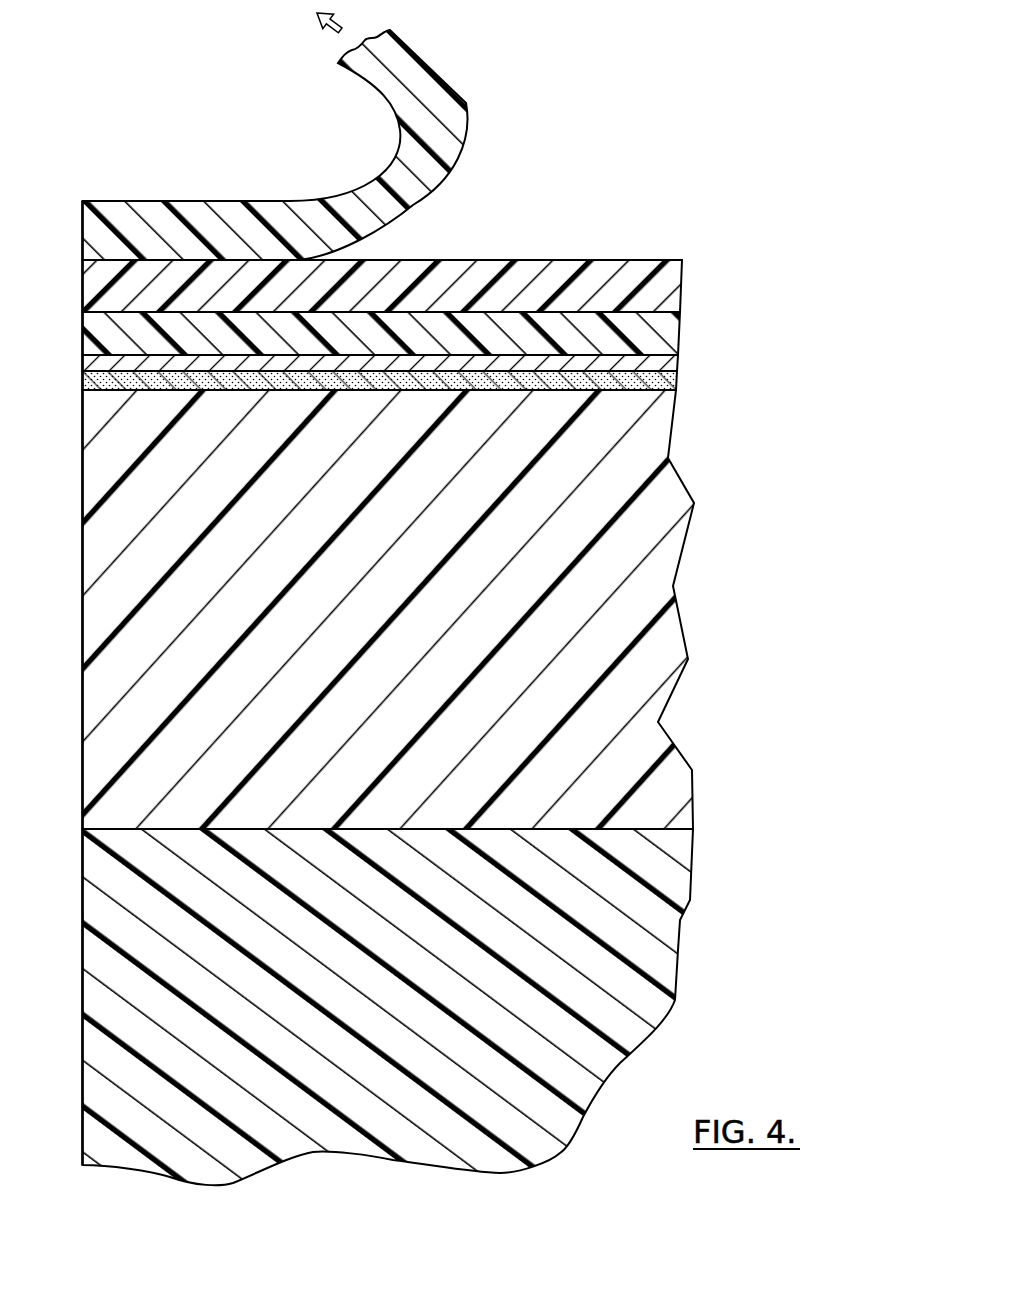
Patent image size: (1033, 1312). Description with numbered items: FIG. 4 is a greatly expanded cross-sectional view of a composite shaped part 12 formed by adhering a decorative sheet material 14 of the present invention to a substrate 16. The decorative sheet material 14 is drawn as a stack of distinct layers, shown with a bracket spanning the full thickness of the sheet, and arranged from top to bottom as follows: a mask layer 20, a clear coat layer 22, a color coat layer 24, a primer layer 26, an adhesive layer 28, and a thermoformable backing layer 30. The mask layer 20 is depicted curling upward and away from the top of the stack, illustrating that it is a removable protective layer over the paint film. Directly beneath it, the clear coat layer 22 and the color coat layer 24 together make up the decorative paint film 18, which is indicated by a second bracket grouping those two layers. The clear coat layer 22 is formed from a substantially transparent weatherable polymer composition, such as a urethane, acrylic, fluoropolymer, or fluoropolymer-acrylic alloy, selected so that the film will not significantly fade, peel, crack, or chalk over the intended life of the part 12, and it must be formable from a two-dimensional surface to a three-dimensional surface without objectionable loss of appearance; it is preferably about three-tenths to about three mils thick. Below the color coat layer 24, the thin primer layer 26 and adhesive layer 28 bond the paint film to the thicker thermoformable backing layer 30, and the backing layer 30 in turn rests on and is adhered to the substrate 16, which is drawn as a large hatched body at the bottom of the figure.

The composite shaped part 12 is at (650, 168).
The decorative sheet material 14 is at (76, 197).
The substrate 16 is at (680, 887).
The decorative paint film 18 is at (688, 262).
The mask layer 20 is at (468, 100).
The clear coat layer 22 is at (628, 275).
The color coat layer 24 is at (642, 338).
The primer layer 26 is at (663, 365).
The adhesive layer 28 is at (667, 382).
The thermoformable backing layer 30 is at (660, 492).